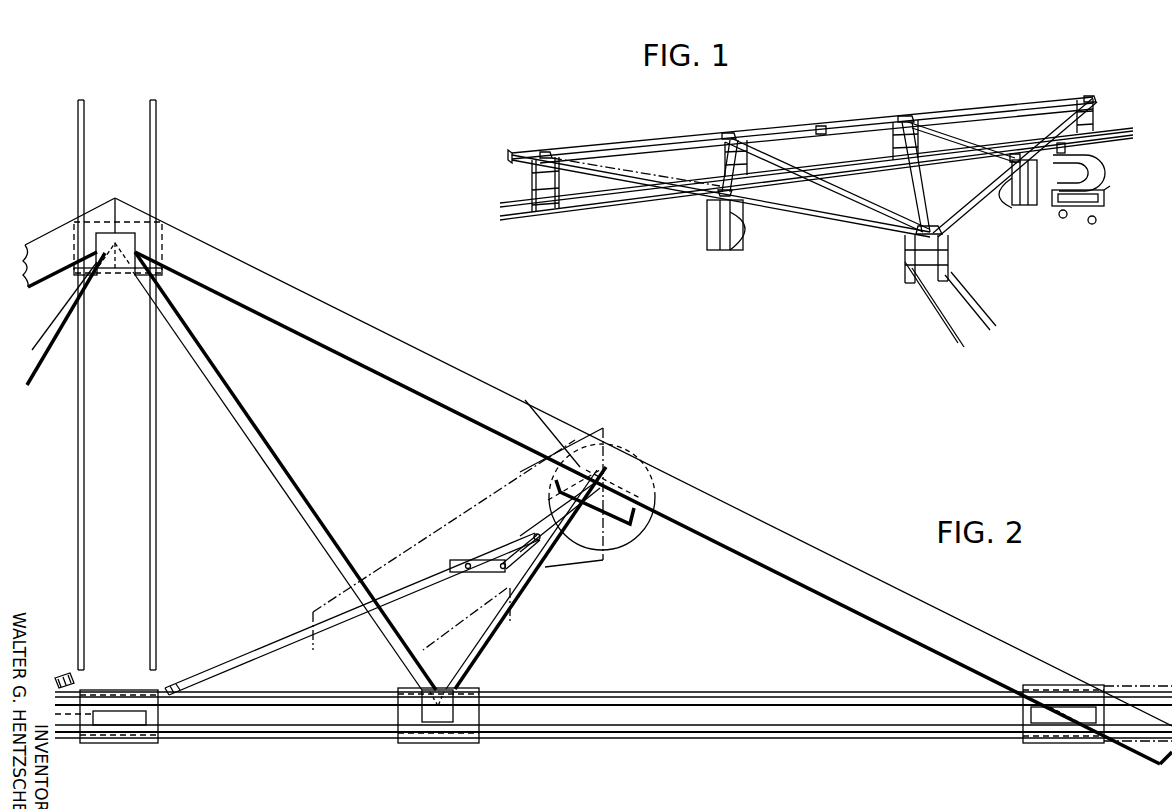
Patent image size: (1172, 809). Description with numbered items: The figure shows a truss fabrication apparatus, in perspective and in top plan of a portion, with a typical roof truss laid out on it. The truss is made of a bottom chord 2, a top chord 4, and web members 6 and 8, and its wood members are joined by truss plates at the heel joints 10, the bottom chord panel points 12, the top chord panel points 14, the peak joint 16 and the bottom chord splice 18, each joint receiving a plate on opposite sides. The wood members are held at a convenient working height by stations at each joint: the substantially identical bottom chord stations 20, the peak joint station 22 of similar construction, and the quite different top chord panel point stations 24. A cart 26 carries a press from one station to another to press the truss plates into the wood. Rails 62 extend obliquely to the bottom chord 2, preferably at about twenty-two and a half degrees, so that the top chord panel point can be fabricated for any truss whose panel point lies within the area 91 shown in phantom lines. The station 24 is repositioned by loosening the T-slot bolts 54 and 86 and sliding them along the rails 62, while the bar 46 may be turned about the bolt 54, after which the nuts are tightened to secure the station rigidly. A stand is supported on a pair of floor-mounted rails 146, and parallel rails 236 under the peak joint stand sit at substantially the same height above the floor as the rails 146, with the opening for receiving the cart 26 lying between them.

In FIG. 1, the bottom chord 2 is at (658, 148).
In FIG. 2, the bottom chord 2 is at (763, 714).
In FIG. 1, the top chord 4 is at (788, 212).
In FIG. 2, the top chord 4 is at (43, 286).
In FIG. 1, the web member 6 is at (915, 195).
In FIG. 2, the web member 6 is at (42, 358).
In FIG. 1, the web member 8 is at (720, 173).
In FIG. 2, the web member 8 is at (484, 648).
In FIG. 1, the heel joint 10 is at (544, 150).
In FIG. 2, the heel joint 10 is at (1068, 710).
In FIG. 1, the bottom chord panel point 12 is at (736, 131).
In FIG. 2, the bottom chord panel point 12 is at (436, 690).
In FIG. 1, the top chord panel point 14 is at (708, 199).
In FIG. 2, the top chord panel point 14 is at (620, 467).
In FIG. 1, the peak joint 16 is at (944, 232).
In FIG. 2, the peak joint 16 is at (117, 210).
In FIG. 1, the bottom chord splice 18 is at (818, 126).
In FIG. 2, the bottom chord splice 18 is at (119, 723).
In FIG. 1, the bottom chord station 20 is at (529, 177).
In FIG. 2, the bottom chord station 20 is at (150, 740).
In FIG. 1, the peak joint station 22 is at (904, 256).
In FIG. 2, the peak joint station 22 is at (155, 280).
In FIG. 1, the top chord panel point station 24 is at (707, 233).
In FIG. 2, the top chord panel point station 24 is at (567, 478).
In FIG. 1, the cart 26 is at (1114, 162).
In FIG. 2, the bar 46 is at (504, 563).
In FIG. 2, the T-slot bolt 54 is at (538, 534).
In FIG. 2, the rails 62 is at (246, 660).
In FIG. 2, the T-slot bolt 86 is at (462, 572).
In FIG. 2, the area 91 is at (440, 532).
In FIG. 1, the rails 146 is at (627, 204).
In FIG. 2, the rails 146 is at (676, 672).
In FIG. 1, the rails 236 is at (920, 318).
In FIG. 2, the rails 236 is at (84, 449).